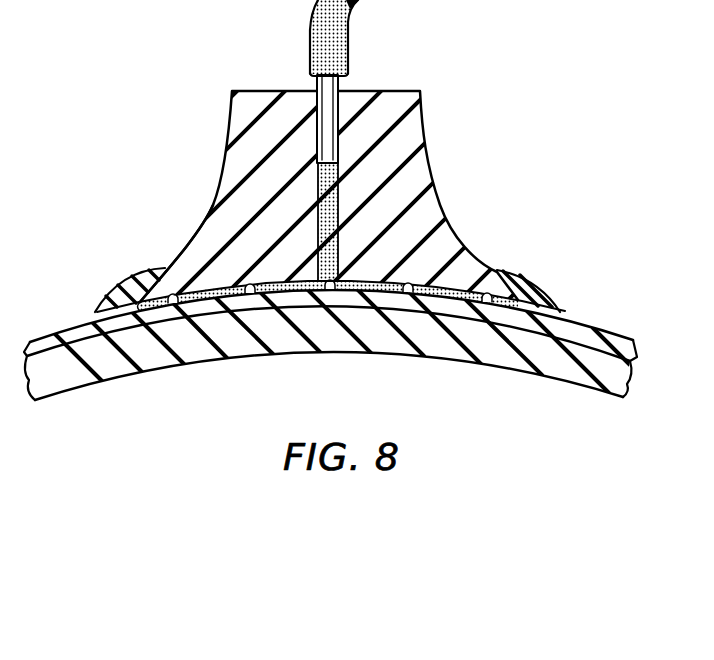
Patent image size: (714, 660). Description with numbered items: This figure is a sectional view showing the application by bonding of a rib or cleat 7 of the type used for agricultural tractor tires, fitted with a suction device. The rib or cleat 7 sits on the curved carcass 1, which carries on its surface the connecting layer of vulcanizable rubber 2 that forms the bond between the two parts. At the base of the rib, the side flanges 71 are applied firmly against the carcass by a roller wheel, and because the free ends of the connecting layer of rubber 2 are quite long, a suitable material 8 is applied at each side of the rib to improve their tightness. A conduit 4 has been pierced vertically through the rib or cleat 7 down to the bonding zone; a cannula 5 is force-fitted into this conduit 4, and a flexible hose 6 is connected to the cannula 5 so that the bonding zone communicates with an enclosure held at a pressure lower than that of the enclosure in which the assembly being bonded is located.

The carcass 1 is at (558, 367).
The connecting layer of vulcanizable rubber 2 is at (588, 328).
The conduit 4 is at (333, 195).
The cannula 5 is at (328, 90).
The flexible hose 6 is at (331, 28).
The rib or cleat 7 is at (427, 127).
The side flanges 71 is at (176, 264).
The suitable material 8 is at (110, 300).